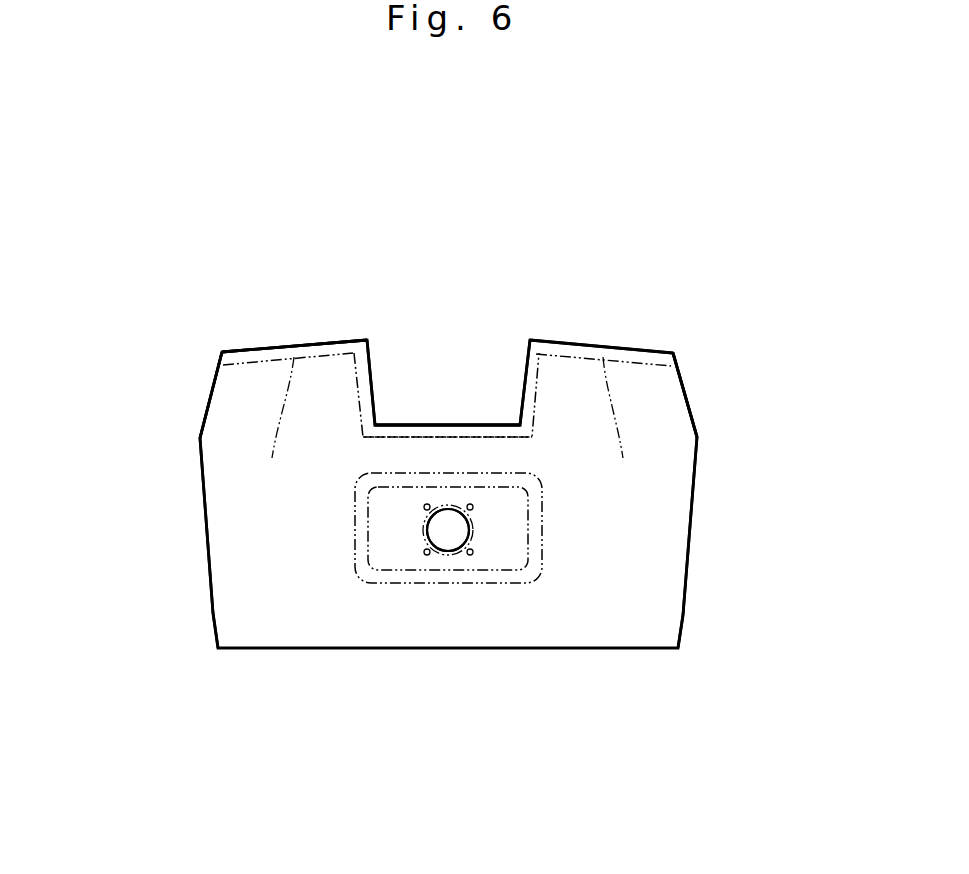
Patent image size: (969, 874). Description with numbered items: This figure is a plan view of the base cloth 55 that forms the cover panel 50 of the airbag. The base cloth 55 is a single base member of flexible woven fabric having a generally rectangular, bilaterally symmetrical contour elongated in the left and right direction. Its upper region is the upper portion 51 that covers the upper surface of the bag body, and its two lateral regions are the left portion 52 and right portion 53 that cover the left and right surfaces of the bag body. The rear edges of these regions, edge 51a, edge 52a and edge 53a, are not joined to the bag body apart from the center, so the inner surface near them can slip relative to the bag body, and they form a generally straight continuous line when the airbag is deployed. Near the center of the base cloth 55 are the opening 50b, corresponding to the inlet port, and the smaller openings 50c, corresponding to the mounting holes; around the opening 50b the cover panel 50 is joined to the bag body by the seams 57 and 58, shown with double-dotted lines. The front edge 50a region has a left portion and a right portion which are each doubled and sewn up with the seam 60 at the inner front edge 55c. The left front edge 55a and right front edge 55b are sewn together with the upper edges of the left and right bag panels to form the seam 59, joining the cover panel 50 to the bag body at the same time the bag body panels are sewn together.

The base cloth 55 is at (625, 267).
The cover panel 50 is at (294, 346).
The front edge 50a is at (412, 425).
The opening 50b is at (447, 552).
The openings 50c is at (471, 556).
The upper portion 51 is at (197, 362).
The edge of upper portion 51a is at (212, 393).
The left portion 52 is at (195, 570).
The edge of left portion 52a is at (212, 615).
The right portion 53 is at (698, 568).
The edge of right portion 53a is at (683, 615).
The left front edge 55a is at (295, 343).
The right front edge 55b is at (602, 343).
The inner front edge 55c is at (448, 425).
The seam 57 is at (423, 532).
The seam 58 is at (530, 578).
The seam 59 is at (449, 424).
The seam 60 is at (480, 440).